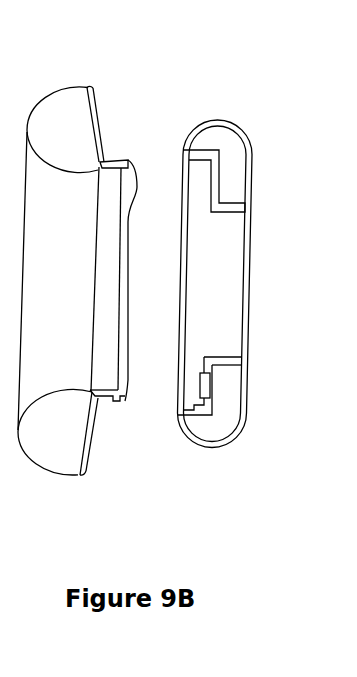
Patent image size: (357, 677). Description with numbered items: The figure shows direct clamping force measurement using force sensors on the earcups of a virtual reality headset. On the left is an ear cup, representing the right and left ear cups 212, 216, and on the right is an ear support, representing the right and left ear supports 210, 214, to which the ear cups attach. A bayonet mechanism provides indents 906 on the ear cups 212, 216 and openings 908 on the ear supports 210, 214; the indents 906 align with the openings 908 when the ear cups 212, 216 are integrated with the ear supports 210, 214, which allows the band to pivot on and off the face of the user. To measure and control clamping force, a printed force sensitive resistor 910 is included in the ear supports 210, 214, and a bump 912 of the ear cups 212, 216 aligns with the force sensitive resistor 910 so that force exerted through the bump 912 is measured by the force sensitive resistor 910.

The right ear cup 212 is at (74, 251).
The left ear cup 216 is at (73, 82).
The right ear support 210 is at (249, 260).
The left ear support 214 is at (248, 137).
The indents 906 is at (127, 305).
The openings 908 is at (200, 157).
The printed force sensitive resistor 910 is at (210, 385).
The bump 912 is at (130, 370).